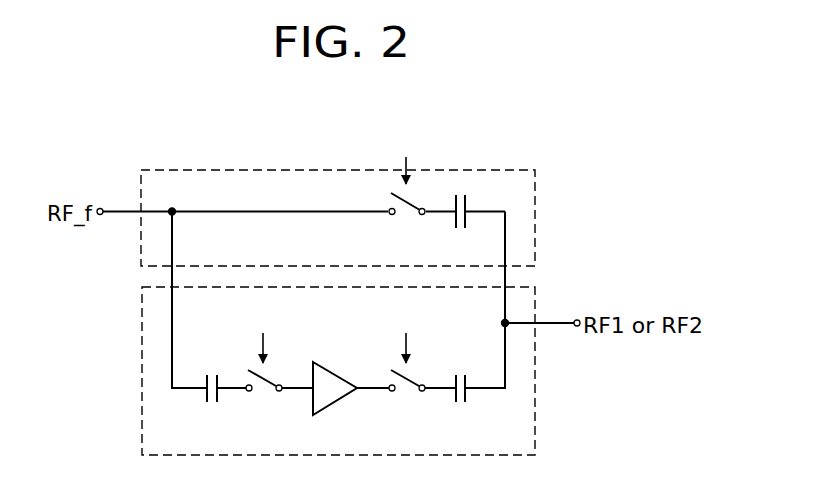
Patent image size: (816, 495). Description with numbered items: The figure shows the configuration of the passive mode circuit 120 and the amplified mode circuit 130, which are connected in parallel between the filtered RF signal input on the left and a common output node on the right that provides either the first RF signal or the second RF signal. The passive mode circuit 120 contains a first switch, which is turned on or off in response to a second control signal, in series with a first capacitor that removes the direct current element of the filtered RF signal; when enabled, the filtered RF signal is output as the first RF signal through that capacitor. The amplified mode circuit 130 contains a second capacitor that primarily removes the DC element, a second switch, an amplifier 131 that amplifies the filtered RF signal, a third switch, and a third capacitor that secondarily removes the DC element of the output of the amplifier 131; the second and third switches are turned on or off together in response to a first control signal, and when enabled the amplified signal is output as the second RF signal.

The passive mode circuit 120 is at (535, 218).
The amplified mode circuit 130 is at (381, 371).
The amplifier 131 is at (331, 369).